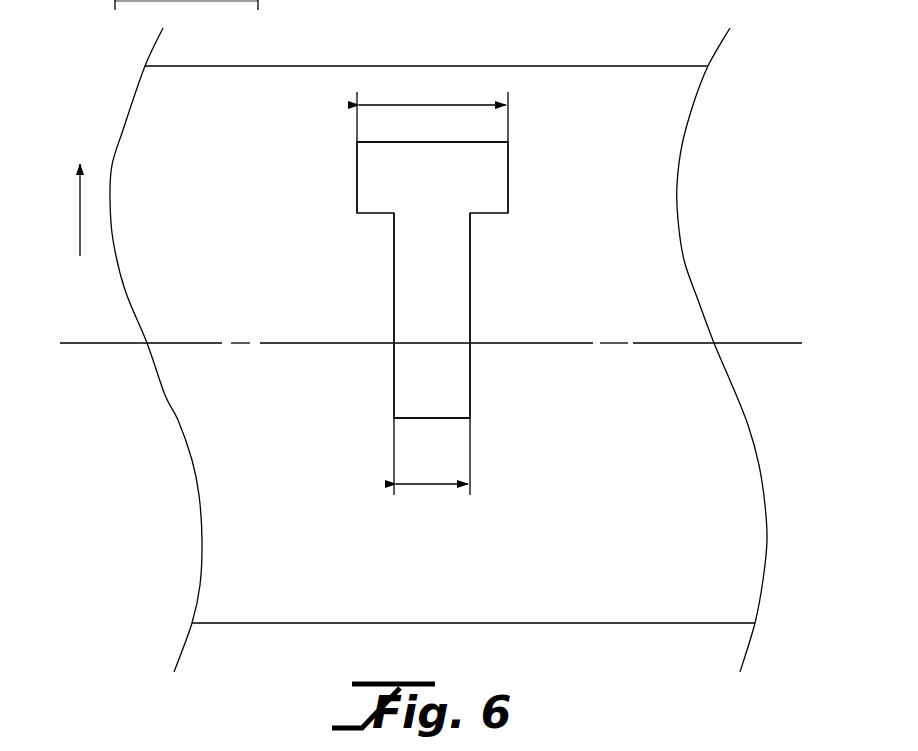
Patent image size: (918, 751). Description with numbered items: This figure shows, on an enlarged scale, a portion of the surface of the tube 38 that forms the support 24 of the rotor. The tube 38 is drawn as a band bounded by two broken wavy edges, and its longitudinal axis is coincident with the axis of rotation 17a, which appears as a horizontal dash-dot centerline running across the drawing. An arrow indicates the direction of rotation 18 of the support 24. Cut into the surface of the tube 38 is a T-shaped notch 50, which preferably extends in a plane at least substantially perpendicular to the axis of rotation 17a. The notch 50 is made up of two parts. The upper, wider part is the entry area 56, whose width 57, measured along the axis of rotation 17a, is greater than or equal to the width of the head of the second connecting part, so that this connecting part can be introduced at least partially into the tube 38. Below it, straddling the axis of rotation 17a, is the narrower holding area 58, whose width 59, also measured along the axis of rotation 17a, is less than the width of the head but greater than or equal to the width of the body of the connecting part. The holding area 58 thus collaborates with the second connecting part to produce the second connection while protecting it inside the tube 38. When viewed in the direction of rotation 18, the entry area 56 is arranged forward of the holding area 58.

The direction of rotation 18 is at (80, 210).
The support 24 is at (178, 420).
The tube 38 is at (598, 66).
The notch 50 is at (340, 203).
The entry area 56 is at (508, 193).
The width of the entry area 57 is at (432, 108).
The holding area 58 is at (470, 373).
The width of the holding area 59 is at (432, 456).
The axis of rotation 17a is at (768, 343).